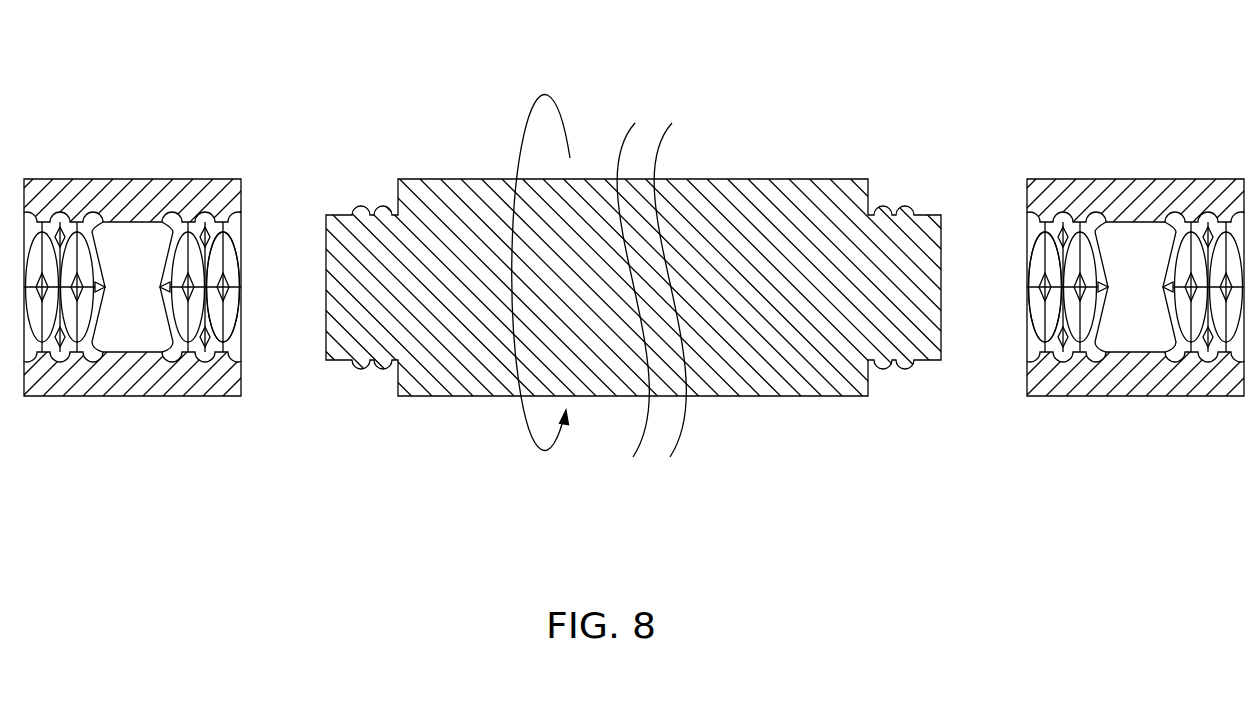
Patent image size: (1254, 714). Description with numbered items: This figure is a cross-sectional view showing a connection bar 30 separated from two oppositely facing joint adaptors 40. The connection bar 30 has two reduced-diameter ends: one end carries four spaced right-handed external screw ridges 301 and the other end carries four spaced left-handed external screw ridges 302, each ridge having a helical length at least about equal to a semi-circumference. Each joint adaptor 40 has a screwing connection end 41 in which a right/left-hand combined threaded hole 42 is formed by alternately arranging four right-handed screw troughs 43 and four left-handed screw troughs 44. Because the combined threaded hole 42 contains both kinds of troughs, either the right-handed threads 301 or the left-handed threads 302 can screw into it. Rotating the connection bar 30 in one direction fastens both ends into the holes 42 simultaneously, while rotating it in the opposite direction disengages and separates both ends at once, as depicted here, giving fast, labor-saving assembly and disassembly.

The connection bar 30 is at (703, 179).
The right-handed external screw ridges 301 is at (363, 212).
The left-handed external screw ridges 302 is at (903, 213).
The joint adaptor 40 is at (141, 180).
The screwing connection end 41 is at (241, 376).
The right/left-hand combined threaded hole 42 is at (238, 318).
The right-handed screw troughs 43 is at (243, 221).
The left-handed screw troughs 44 is at (242, 240).